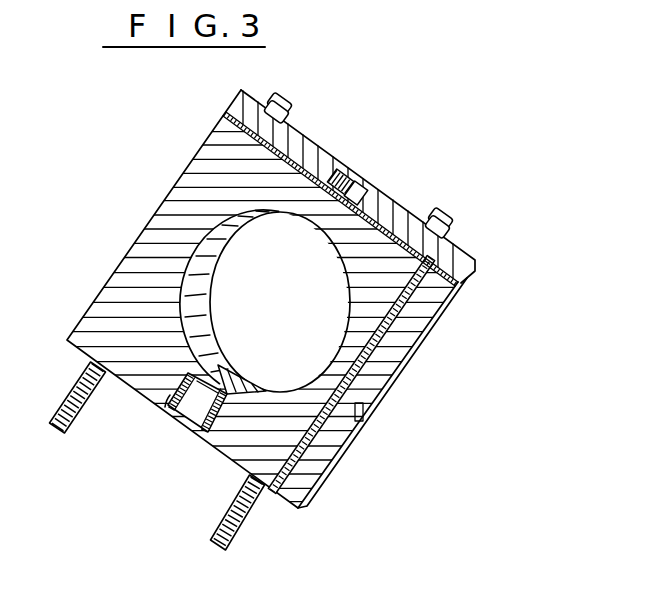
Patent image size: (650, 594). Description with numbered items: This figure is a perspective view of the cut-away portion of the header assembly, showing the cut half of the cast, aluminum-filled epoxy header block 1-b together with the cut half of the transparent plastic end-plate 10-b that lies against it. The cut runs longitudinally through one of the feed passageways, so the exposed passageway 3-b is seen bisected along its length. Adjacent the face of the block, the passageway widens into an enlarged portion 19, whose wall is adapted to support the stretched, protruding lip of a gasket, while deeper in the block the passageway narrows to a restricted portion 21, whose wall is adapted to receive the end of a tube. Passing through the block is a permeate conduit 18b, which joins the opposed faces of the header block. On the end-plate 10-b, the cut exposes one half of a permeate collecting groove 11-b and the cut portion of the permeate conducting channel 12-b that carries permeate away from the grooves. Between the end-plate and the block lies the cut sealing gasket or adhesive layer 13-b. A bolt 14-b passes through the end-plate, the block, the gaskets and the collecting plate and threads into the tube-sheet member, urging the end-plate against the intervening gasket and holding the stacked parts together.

The header block 1-b is at (418, 359).
The passageway 3-b is at (205, 418).
The end-plate 10-b is at (466, 249).
The permeate collecting groove 11-b is at (383, 212).
The permeate conducting channel 12-b is at (355, 190).
The sealing gasket 13-b is at (464, 287).
The bolt 14-b is at (281, 99).
The permeate conduit 18b is at (362, 414).
The enlarged portion of passageway 19 is at (168, 408).
The restricted portion of passageway 21 is at (226, 374).